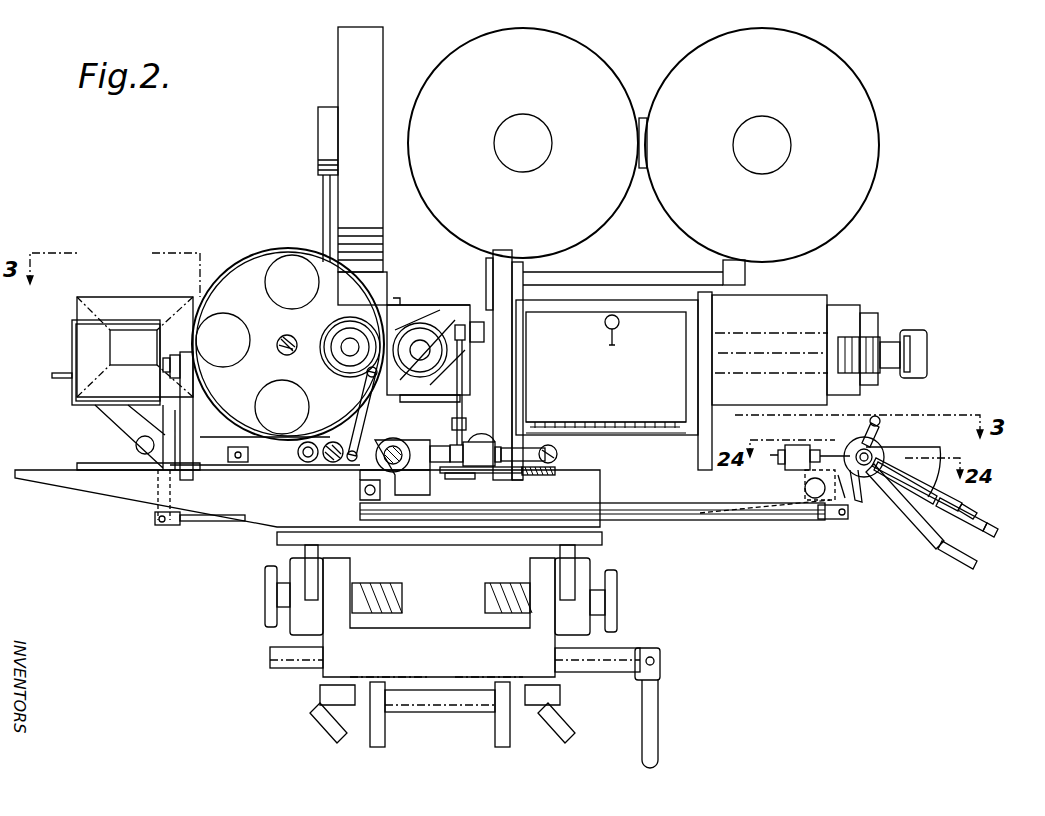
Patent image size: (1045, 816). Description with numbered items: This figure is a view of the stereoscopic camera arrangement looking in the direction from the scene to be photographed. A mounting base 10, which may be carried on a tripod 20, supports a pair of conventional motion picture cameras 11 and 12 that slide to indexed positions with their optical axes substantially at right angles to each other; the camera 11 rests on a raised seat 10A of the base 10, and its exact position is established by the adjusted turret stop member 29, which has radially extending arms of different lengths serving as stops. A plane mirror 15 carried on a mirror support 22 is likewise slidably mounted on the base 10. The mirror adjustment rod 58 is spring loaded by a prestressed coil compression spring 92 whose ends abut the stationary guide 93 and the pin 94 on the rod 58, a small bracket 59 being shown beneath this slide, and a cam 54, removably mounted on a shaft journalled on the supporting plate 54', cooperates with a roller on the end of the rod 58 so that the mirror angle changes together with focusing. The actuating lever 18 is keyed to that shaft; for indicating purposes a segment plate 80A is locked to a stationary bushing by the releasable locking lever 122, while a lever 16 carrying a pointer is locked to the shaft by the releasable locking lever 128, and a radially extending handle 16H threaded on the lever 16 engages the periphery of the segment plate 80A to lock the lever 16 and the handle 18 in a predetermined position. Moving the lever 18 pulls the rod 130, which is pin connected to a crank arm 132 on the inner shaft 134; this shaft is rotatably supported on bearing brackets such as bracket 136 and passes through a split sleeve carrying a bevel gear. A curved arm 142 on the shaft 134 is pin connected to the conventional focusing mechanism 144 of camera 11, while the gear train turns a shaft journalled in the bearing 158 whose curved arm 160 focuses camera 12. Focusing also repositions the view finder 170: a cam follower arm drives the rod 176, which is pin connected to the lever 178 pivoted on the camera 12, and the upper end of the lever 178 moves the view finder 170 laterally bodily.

The mounting base 10 is at (92, 486).
The raised seat 10A is at (88, 467).
The motion picture camera 11 is at (250, 252).
The motion picture camera 12 is at (805, 300).
The plane mirror 15 is at (437, 307).
The lever 16 is at (967, 507).
The handle 16H is at (960, 532).
The actuating lever 18 is at (945, 547).
The tripod 20 is at (305, 725).
The mirror support 22 is at (478, 402).
The turret stop member 29 is at (236, 468).
The cam 54 is at (882, 511).
The supporting plate 54' is at (849, 517).
The mirror adjustment rod 58 is at (642, 478).
The bracket 59 is at (473, 478).
The segment plate 80A is at (935, 452).
The coil compression spring 92 is at (545, 474).
The stationary guide 93 is at (517, 472).
The pin 94 is at (560, 467).
The releasable locking lever 122 is at (885, 434).
The releasable locking lever 128 is at (862, 434).
The rod 130 is at (818, 520).
The crank arm 132 is at (360, 487).
The inner shaft 134 is at (375, 470).
The bearing bracket 136 is at (425, 492).
The curved arm 142 is at (380, 447).
The focusing mechanism 144 is at (365, 380).
The bearing 158 is at (490, 445).
The curved arm 160 is at (483, 432).
The view finder 170 is at (118, 296).
The rod 176 is at (210, 522).
The lever 178 is at (155, 518).